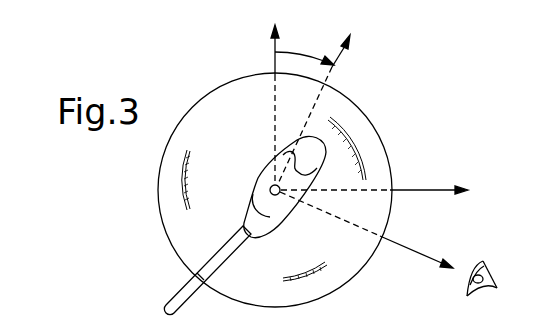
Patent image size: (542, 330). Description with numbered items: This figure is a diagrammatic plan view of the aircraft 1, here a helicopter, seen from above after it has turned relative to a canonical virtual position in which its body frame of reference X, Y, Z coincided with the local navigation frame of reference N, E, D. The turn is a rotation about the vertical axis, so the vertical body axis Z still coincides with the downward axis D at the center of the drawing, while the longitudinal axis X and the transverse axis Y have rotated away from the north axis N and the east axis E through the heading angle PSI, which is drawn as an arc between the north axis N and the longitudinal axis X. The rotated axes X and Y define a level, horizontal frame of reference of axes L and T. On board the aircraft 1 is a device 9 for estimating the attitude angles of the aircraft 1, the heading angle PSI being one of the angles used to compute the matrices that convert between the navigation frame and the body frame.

The aircraft 1 is at (200, 227).
The device for estimating attitude angles 9 is at (256, 193).
The north axis of the local navigation frame of reference N is at (275, 61).
The heading angle PSI is at (304, 44).
The X axis of the body frame of reference X is at (332, 98).
The Y axis of the body frame of reference Y is at (409, 252).
The Z axis of the body frame of reference Z is at (268, 190).
The east axis of the local navigation frame of reference E is at (374, 176).